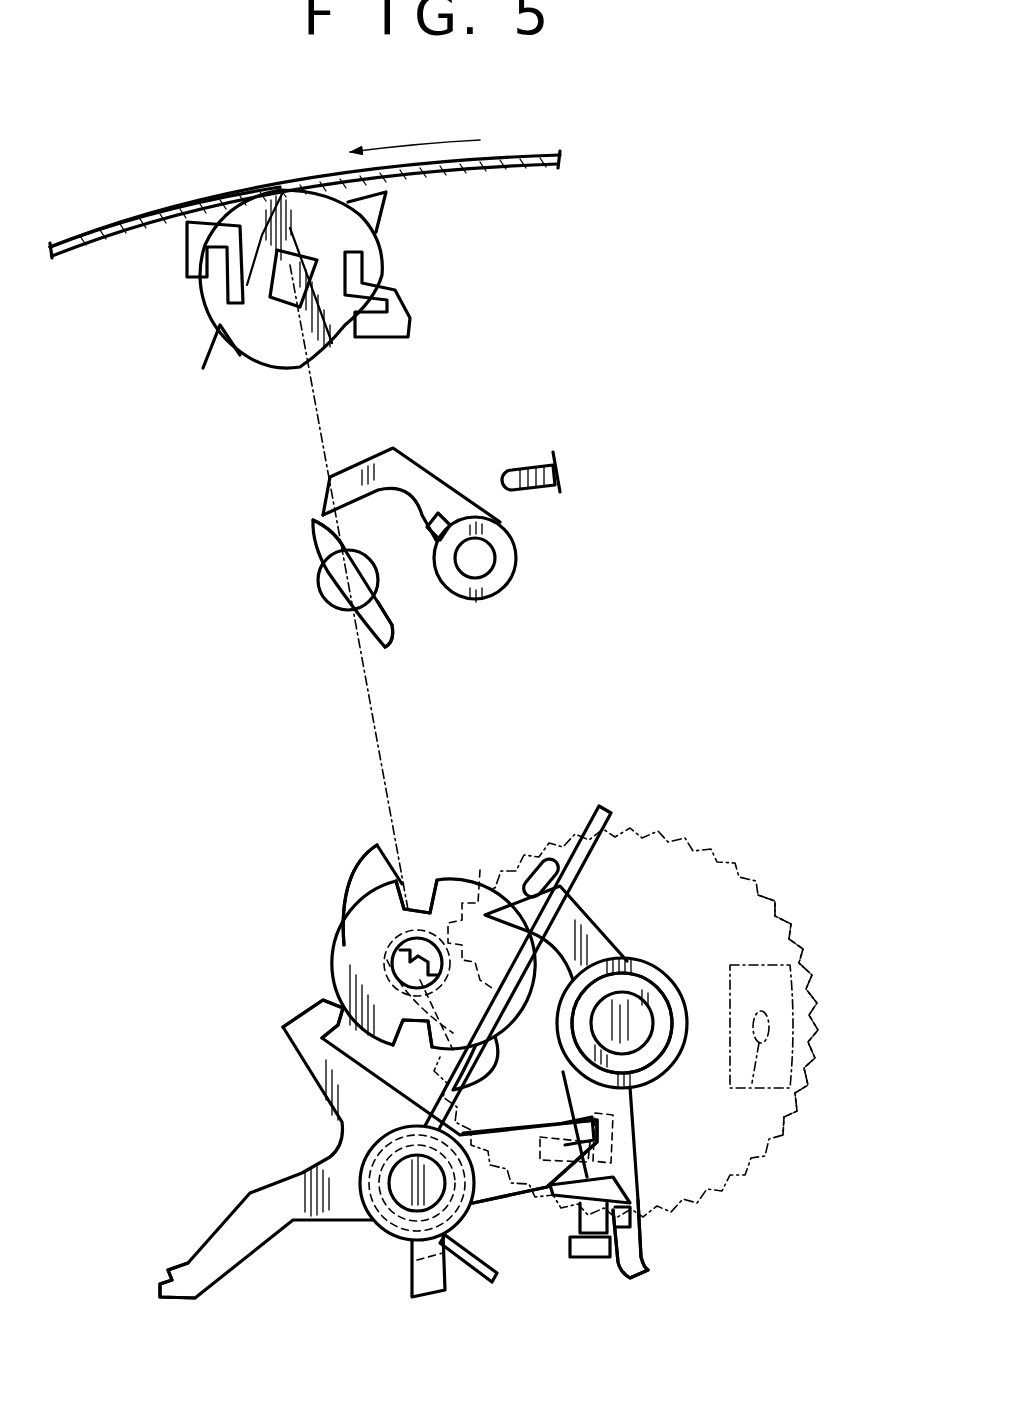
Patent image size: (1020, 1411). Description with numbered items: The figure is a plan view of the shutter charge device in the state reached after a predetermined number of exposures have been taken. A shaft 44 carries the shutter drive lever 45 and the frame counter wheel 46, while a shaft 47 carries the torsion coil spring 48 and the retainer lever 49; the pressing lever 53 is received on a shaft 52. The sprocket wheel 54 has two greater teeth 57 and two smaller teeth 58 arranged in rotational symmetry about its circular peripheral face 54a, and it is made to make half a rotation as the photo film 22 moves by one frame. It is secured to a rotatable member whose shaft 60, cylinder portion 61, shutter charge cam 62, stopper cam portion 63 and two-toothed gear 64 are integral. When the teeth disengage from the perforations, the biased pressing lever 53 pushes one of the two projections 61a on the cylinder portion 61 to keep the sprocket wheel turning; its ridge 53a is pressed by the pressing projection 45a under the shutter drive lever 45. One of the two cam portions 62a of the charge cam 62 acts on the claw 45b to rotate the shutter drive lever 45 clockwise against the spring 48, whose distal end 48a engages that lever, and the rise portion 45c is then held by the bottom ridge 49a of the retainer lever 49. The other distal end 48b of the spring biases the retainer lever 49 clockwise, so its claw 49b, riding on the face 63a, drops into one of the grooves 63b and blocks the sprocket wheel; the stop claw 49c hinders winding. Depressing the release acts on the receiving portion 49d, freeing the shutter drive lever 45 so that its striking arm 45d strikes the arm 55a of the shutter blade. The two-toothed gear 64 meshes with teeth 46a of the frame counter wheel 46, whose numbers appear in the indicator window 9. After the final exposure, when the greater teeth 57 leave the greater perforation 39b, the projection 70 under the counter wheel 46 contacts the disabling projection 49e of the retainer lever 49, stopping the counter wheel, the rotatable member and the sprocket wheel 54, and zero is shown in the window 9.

The indicator window 9 is at (803, 1003).
The photo film 22 is at (438, 182).
The greater perforation 39b is at (138, 212).
The shaft 44 is at (605, 1022).
The shutter drive lever 45 is at (598, 1073).
The pressing projection 45a is at (513, 477).
The claw 45b is at (477, 883).
The rise portion 45c is at (618, 1193).
The striking arm 45d is at (650, 1270).
The frame counter wheel 46 is at (660, 1061).
The teeth 46a is at (800, 1123).
The shaft 47 is at (403, 1183).
The torsion coil spring 48 is at (550, 1053).
The distal end 48a is at (590, 850).
The distal end 48b is at (497, 1280).
The retainer lever 49 is at (370, 1175).
The bottom ridge 49a is at (533, 1127).
The claw 49b is at (327, 1018).
The stop claw 49c is at (167, 1280).
The receiving portion 49d is at (432, 1283).
The disabling projection 49e is at (548, 1095).
The shaft 52 is at (456, 532).
The pressing lever 53 is at (499, 601).
The ridge 53a is at (440, 517).
The sprocket wheel 54 is at (300, 317).
The circular peripheral face 54a is at (260, 368).
The arm 55a is at (585, 1258).
The greater teeth 57 is at (192, 230).
The smaller teeth 58 is at (384, 199).
The shaft 60 is at (367, 580).
The cylinder portion 61 is at (353, 608).
The projections 61a is at (318, 538).
The shutter charge cam 62 is at (331, 866).
The cam portions 62a is at (362, 846).
The stopper cam portion 63 is at (384, 919).
The face 63a is at (383, 965).
The grooves 63b is at (418, 906).
The two-toothed gear 64 is at (390, 970).
The projection 70 is at (615, 1133).